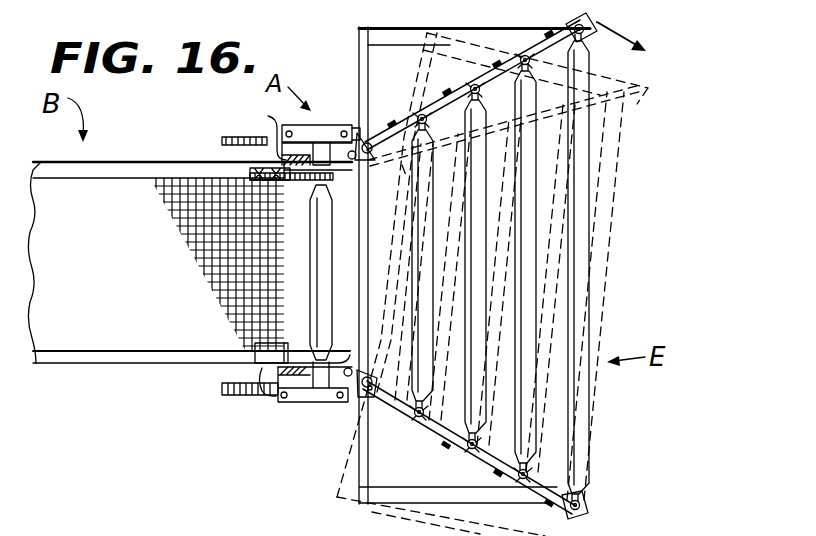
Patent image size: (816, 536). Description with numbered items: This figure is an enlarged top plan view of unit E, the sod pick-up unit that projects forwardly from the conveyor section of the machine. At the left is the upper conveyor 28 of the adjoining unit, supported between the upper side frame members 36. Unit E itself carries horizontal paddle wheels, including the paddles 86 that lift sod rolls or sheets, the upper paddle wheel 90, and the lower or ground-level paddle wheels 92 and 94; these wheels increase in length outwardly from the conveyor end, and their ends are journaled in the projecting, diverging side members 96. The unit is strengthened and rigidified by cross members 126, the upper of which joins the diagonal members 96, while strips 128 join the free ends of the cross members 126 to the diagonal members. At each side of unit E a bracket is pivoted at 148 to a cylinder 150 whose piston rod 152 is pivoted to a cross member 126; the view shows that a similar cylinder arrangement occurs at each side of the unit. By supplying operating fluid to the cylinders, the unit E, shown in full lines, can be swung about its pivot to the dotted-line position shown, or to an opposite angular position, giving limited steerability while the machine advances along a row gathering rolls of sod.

The upper conveyor 28 is at (157, 290).
The upper side frame members 36 is at (112, 162).
The paddles 86 is at (312, 238).
The upper paddle wheel 90 is at (537, 172).
The lower paddle wheel 92 is at (363, 221).
The lower paddle wheel 94 is at (487, 176).
The diverging upper side members 96 is at (647, 63).
The cross members 126 is at (358, 62).
The strips 128 is at (481, 27).
The pivot 148 is at (276, 126).
The cylinder 150 is at (325, 123).
The piston rod 152 is at (361, 124).